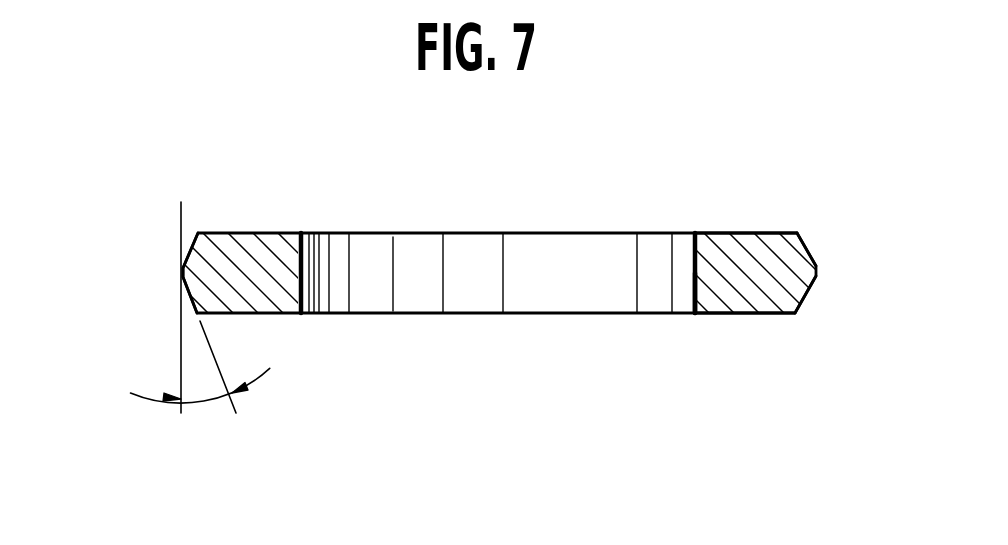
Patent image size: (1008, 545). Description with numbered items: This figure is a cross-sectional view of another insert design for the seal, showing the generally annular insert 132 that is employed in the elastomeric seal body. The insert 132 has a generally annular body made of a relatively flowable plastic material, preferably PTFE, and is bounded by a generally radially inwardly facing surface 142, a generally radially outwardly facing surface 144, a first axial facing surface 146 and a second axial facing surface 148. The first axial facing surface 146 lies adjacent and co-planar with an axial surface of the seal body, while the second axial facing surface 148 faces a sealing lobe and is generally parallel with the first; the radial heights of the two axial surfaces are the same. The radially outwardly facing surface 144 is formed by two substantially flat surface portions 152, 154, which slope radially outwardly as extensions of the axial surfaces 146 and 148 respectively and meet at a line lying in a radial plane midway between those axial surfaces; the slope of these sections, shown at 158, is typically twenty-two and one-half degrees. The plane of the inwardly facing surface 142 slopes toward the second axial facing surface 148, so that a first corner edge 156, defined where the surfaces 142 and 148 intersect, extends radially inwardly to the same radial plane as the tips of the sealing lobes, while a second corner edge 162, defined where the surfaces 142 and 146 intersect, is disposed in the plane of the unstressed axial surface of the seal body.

The insert 132 is at (306, 327).
The radially inwardly facing surface 142 is at (319, 252).
The radially outwardly facing surface 144 is at (181, 276).
The first axial facing surface 146 is at (769, 314).
The second axial facing surface 148 is at (765, 233).
The surface portion 152 is at (810, 293).
The surface portion 154 is at (810, 249).
The first corner edge 156 is at (693, 233).
The slope of the sections 158 is at (205, 398).
The second corner edge 162 is at (693, 314).